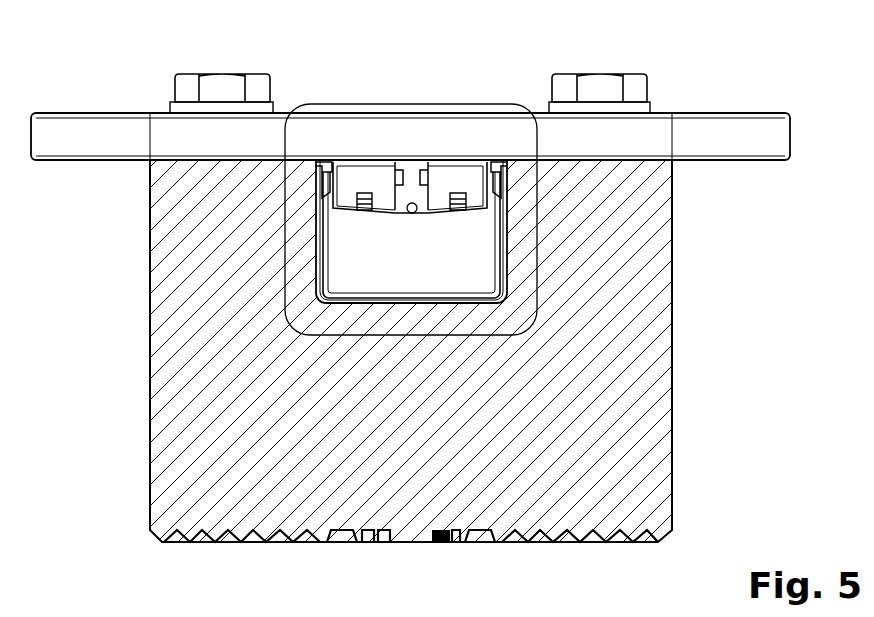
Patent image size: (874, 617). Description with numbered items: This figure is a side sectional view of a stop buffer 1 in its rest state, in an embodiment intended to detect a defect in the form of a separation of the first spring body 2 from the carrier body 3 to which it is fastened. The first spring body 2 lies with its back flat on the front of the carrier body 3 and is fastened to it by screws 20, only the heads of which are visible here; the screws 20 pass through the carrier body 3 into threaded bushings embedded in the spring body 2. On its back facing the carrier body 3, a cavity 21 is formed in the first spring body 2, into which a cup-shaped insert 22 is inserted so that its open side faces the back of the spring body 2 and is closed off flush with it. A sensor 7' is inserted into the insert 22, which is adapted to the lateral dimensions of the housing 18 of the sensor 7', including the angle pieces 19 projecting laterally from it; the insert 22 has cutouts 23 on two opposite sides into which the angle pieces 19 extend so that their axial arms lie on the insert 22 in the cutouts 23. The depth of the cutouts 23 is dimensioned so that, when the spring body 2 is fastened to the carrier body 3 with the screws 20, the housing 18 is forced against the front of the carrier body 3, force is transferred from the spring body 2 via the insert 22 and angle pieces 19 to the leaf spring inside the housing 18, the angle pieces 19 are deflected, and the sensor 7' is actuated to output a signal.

The stop buffer 1 is at (120, 450).
The first spring body 2 is at (185, 365).
The carrier body 3 is at (137, 140).
The sensor 7' is at (396, 116).
The housing 18 is at (442, 182).
The angle pieces 19 is at (318, 168).
The screws 20 is at (224, 86).
The cavity 21 is at (355, 243).
The cup-shaped insert 22 is at (505, 307).
The cutouts 23 is at (320, 195).